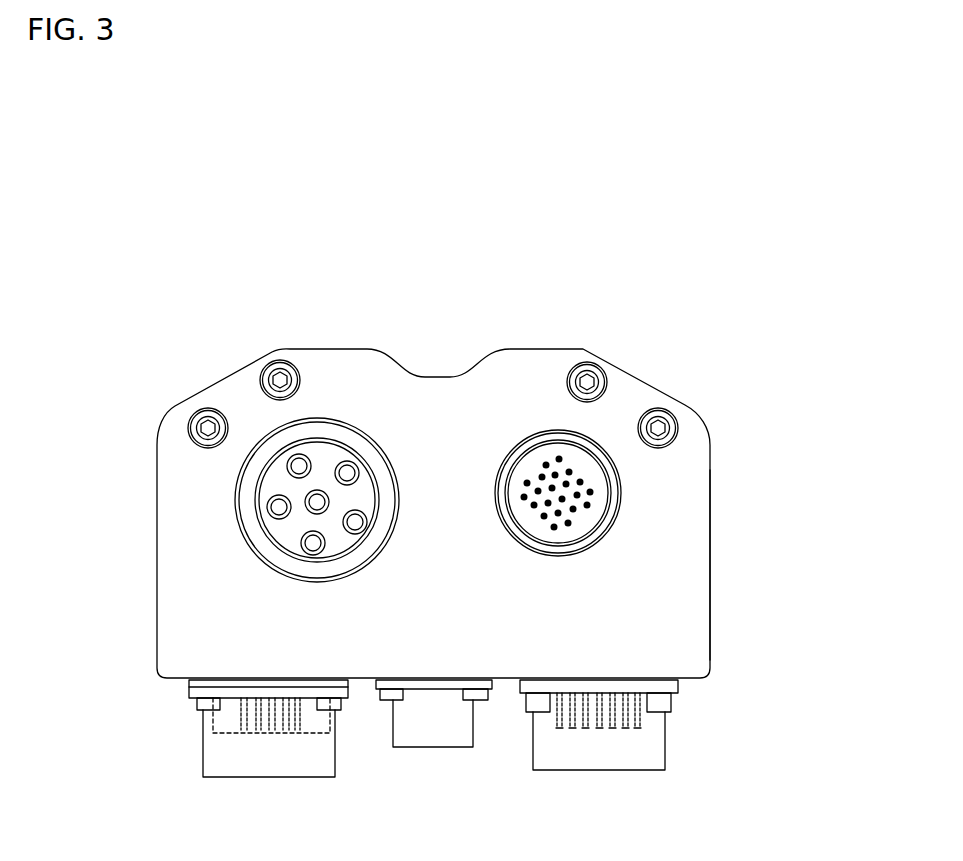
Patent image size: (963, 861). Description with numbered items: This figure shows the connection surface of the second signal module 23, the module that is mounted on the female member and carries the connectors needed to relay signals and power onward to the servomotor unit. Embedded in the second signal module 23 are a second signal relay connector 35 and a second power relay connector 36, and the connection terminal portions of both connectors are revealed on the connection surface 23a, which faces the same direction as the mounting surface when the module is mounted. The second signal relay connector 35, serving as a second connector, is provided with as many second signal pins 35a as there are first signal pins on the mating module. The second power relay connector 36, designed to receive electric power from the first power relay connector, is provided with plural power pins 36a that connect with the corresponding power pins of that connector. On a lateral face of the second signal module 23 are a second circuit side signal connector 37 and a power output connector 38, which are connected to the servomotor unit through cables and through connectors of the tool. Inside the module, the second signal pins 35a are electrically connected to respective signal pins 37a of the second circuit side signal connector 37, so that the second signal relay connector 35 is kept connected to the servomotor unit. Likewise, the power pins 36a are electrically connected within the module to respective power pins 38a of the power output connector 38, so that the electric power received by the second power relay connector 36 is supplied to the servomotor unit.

The second signal module 23 is at (710, 485).
The connection surface 23a is at (690, 557).
The second signal relay connector 35 is at (592, 545).
The second signal pins 35a is at (533, 508).
The second power relay connector 36 is at (372, 558).
The power pins 36a is at (300, 546).
The second circuit side signal connector 37 is at (665, 765).
The signal pins 37a is at (582, 738).
The power output connector 38 is at (335, 762).
The power pins 38a is at (267, 745).